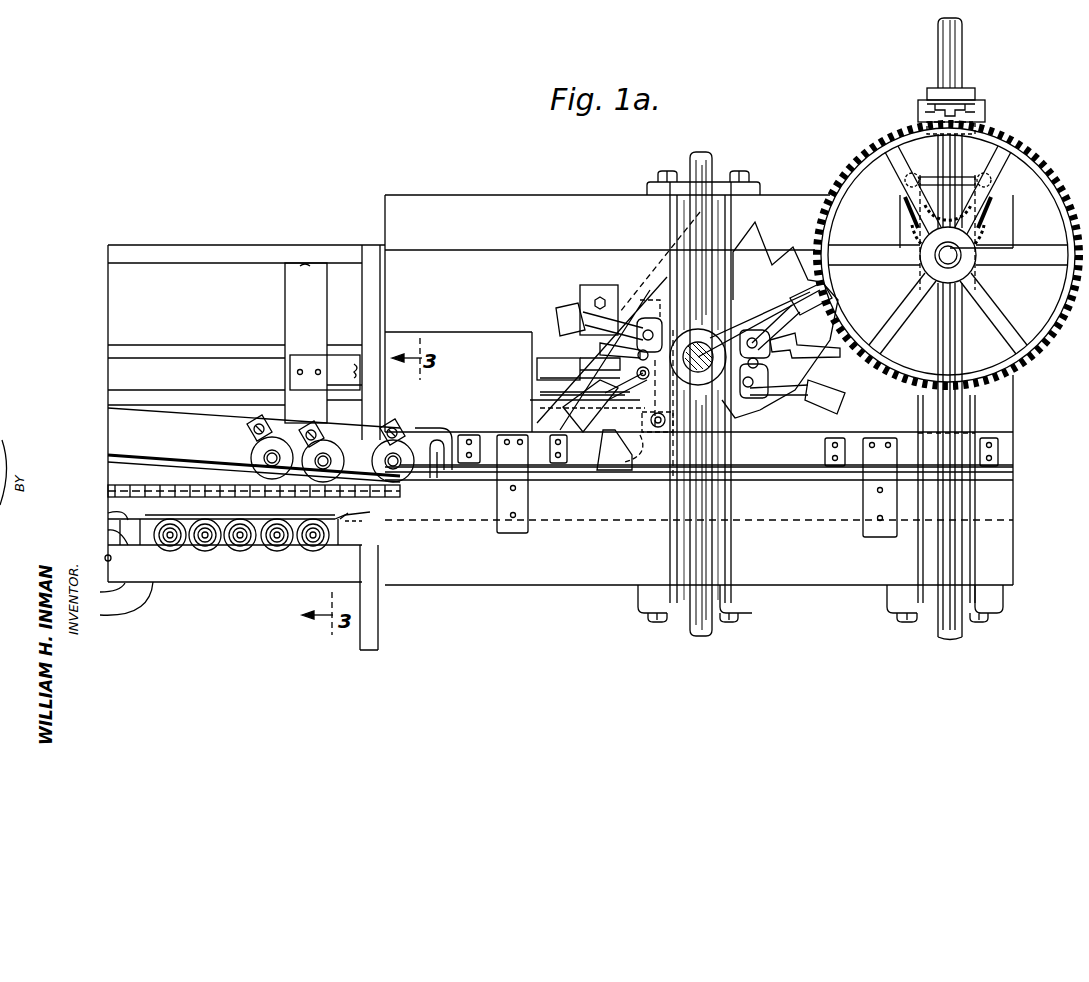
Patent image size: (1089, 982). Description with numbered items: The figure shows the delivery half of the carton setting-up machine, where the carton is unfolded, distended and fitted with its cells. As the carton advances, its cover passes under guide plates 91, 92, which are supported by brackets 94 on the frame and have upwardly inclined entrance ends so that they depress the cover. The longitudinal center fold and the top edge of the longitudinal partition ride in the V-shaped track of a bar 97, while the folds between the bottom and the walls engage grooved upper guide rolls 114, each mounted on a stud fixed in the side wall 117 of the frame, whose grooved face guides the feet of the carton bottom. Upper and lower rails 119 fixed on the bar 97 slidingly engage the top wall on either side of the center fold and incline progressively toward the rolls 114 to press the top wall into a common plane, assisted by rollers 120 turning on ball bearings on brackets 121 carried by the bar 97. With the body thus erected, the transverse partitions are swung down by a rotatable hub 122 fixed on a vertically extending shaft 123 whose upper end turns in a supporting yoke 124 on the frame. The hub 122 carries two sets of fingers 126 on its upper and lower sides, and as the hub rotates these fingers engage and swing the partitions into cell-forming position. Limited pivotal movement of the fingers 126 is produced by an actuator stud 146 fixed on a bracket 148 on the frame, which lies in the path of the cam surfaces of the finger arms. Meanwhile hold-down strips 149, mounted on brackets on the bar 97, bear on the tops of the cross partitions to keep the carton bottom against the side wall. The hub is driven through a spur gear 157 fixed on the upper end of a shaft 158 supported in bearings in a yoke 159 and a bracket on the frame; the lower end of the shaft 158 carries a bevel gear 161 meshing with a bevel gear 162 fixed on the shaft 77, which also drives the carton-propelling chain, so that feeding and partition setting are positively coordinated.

The shaft 77 is at (960, 155).
The guide plate 91 is at (212, 348).
The guide plate 92 is at (262, 394).
The bracket 94 is at (287, 310).
The bar 97 is at (430, 430).
The upper guide rolls 114 is at (256, 540).
The side wall 117 is at (292, 526).
The rails 119 is at (178, 460).
The rollers 120 is at (248, 456).
The brackets 121 is at (245, 433).
The rotatable hub 122 is at (630, 300).
The vertically extending shaft 123 is at (732, 332).
The supporting yoke 124 is at (672, 549).
The fingers 126 is at (552, 331).
The actuator stud 146 is at (604, 468).
The bracket 148 is at (648, 300).
The hold-down strips 149 is at (783, 468).
The spur gear 157 is at (1033, 352).
The shaft 158 is at (945, 258).
The yoke 159 is at (922, 564).
The bevel gear 161 is at (905, 230).
The bevel gear 162 is at (905, 210).